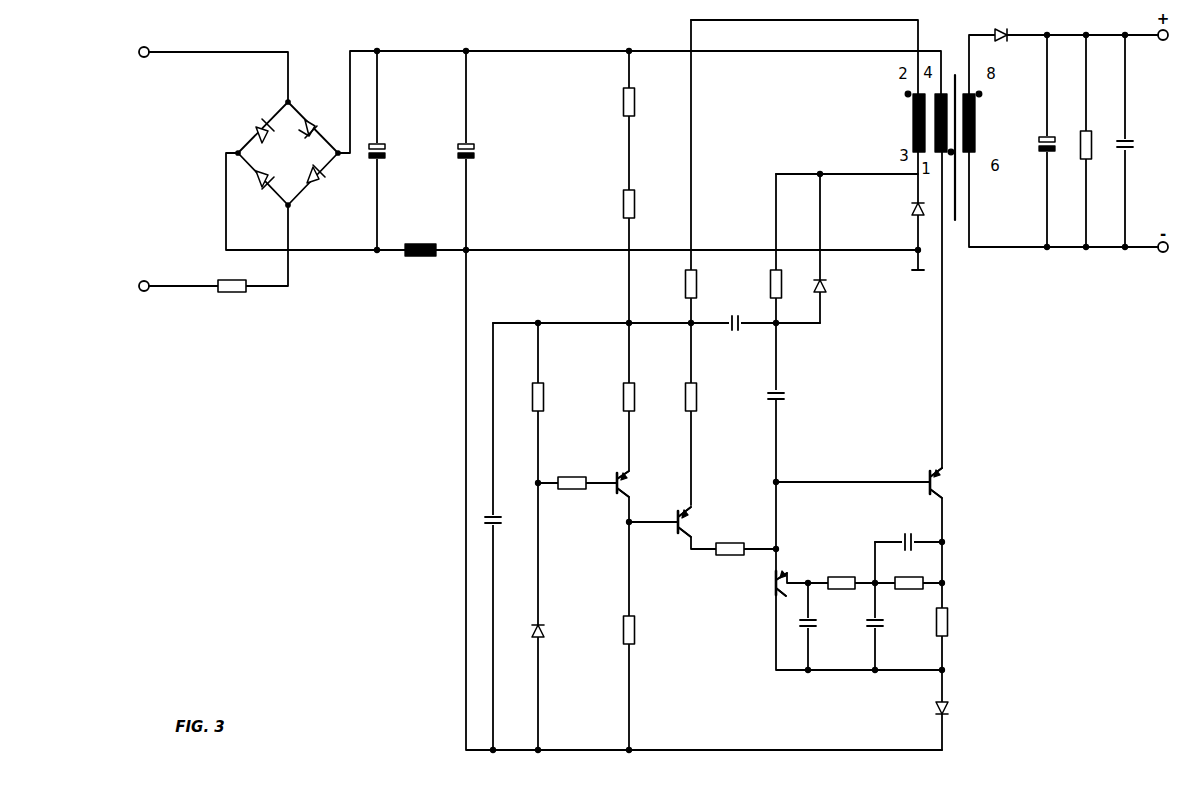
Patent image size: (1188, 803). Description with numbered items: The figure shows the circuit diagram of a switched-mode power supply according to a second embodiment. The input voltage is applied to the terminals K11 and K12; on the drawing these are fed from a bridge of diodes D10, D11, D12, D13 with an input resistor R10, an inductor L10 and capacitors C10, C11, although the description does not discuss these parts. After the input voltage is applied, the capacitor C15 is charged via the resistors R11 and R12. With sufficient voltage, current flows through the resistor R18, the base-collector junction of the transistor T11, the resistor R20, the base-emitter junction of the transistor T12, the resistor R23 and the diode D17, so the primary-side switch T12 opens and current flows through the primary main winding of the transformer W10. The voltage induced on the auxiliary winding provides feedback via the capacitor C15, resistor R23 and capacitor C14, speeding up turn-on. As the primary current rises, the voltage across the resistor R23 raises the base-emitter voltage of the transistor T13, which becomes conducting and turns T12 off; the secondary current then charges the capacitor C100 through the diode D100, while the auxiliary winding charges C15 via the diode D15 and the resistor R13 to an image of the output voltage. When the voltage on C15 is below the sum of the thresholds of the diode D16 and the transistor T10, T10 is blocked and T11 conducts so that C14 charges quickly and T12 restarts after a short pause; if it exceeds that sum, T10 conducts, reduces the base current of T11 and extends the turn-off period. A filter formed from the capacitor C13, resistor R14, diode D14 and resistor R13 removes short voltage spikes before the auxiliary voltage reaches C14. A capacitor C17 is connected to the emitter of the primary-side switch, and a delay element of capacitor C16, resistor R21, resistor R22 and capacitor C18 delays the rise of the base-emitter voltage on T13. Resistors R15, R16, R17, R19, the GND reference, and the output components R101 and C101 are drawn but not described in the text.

The bridge rectifier diode D10 is at (320, 108).
The bridge rectifier diode D11 is at (254, 116).
The bridge rectifier diode D12 is at (277, 164).
The bridge rectifier diode D13 is at (327, 188).
The input series resistor R10 is at (232, 277).
The filter inductor L10 is at (420, 241).
The filter capacitor C10 is at (383, 140).
The filter capacitor C11 is at (456, 143).
The terminal K11 is at (463, 34).
The terminal K12 is at (491, 233).
The resistor R11 is at (619, 100).
The resistor R12 is at (619, 201).
The resistor R13 is at (680, 285).
The resistor R14 is at (765, 285).
The resistor R15 is at (527, 396).
The resistor R16 is at (573, 474).
The resistor R17 is at (618, 396).
The resistor R18 is at (680, 396).
The resistor R19 is at (618, 630).
The resistor R20 is at (731, 540).
The resistor R21 is at (842, 574).
The resistor R22 is at (910, 574).
The resistor R23 is at (931, 622).
The capacitor C13 is at (730, 341).
The capacitor C14 is at (766, 393).
The capacitor C15 is at (483, 520).
The capacitor C16 is at (813, 636).
The capacitor C17 is at (909, 534).
The capacitor C18 is at (864, 620).
The diode D14 is at (810, 285).
The diode D15 is at (907, 212).
The diode D16 is at (526, 628).
The diode D17 is at (930, 707).
The transistor T10 is at (606, 495).
The transistor T11 is at (668, 533).
The primary-side switch T12 is at (955, 483).
The transistor T13 is at (754, 586).
The transformer W10 is at (920, 123).
The ground GND is at (919, 299).
The diode D100 is at (1003, 26).
The capacitor C100 is at (1036, 142).
The output load resistor R101 is at (1075, 144).
The output capacitor C101 is at (1115, 142).